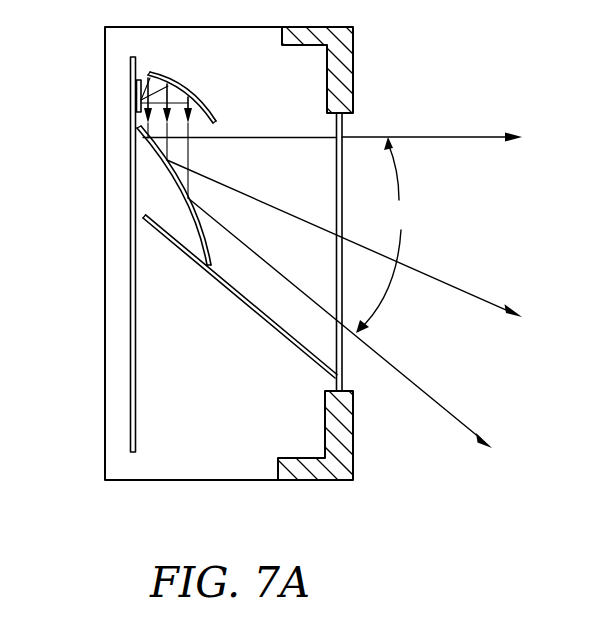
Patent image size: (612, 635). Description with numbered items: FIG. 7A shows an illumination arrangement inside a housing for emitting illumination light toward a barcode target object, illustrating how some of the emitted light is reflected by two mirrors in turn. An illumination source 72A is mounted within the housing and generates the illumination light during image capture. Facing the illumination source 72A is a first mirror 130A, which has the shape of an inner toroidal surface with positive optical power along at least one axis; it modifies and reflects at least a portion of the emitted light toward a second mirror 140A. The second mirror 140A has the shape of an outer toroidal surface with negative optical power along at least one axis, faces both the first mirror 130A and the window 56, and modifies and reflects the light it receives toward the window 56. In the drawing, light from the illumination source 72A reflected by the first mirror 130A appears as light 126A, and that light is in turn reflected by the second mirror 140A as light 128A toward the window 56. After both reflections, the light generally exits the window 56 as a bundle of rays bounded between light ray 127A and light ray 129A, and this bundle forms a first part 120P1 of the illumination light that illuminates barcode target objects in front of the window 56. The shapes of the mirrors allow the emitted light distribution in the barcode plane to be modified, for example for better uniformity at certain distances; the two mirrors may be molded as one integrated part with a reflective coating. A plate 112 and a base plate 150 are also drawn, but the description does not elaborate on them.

The window 56 is at (346, 133).
The illumination source 72A is at (137, 99).
The reflective plate 112 is at (257, 318).
The first part of the illumination light 120P1 is at (389, 235).
The light 126A is at (215, 136).
The light ray 127A is at (451, 135).
The light 128A is at (460, 287).
The light ray 129A is at (422, 389).
The first mirror 130A is at (181, 90).
The second mirror 140A is at (178, 190).
The base plate 150 is at (135, 403).